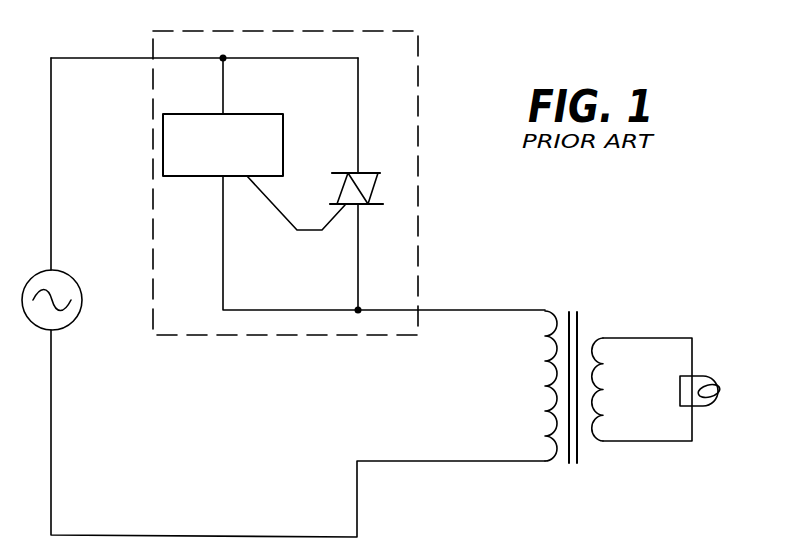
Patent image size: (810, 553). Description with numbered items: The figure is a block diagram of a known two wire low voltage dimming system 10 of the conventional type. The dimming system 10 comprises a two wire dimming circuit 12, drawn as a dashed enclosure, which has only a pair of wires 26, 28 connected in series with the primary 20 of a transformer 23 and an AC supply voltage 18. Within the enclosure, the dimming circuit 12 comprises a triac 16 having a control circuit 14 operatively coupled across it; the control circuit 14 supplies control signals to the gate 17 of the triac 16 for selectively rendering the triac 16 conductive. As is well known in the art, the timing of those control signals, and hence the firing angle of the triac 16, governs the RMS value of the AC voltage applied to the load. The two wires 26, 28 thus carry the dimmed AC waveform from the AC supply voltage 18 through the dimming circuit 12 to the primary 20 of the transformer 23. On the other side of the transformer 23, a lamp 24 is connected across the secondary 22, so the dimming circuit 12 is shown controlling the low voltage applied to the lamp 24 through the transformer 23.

The dimming system 10 is at (500, 235).
The two wire dimming circuit 12 is at (405, 138).
The control circuit 14 is at (163, 157).
The triac 16 is at (378, 177).
The gate 17 is at (322, 230).
The AC supply voltage 18 is at (74, 322).
The primary 20 is at (537, 310).
The secondary 22 is at (593, 337).
The transformer 23 is at (573, 305).
The lamp 24 is at (707, 377).
The wire 26 is at (123, 58).
The wire 28 is at (498, 311).